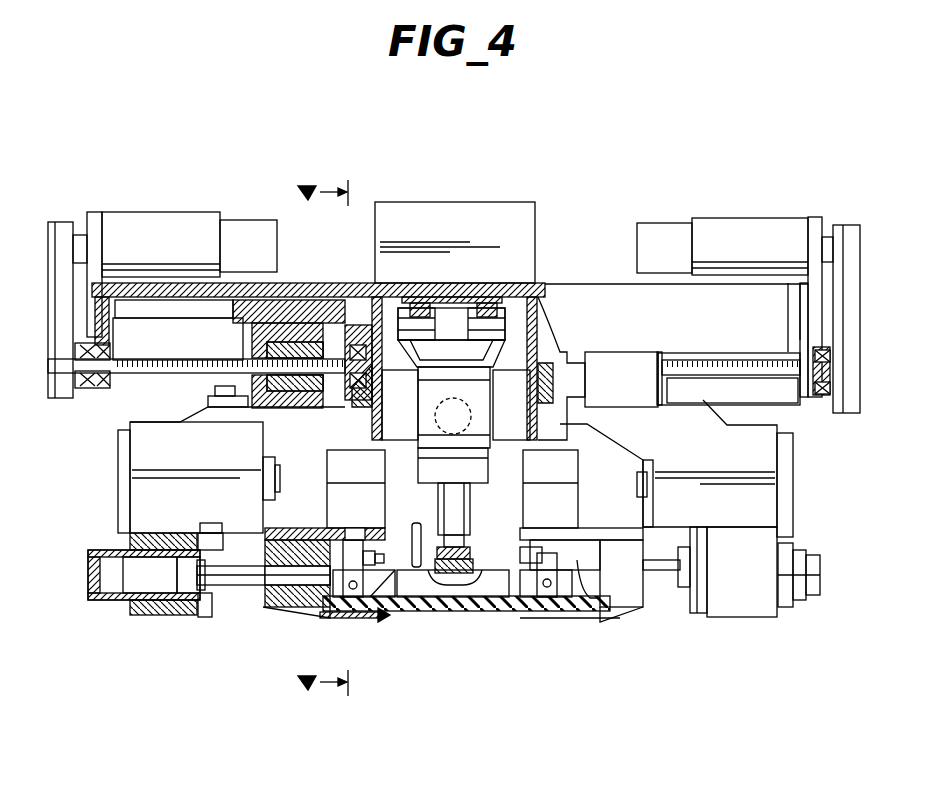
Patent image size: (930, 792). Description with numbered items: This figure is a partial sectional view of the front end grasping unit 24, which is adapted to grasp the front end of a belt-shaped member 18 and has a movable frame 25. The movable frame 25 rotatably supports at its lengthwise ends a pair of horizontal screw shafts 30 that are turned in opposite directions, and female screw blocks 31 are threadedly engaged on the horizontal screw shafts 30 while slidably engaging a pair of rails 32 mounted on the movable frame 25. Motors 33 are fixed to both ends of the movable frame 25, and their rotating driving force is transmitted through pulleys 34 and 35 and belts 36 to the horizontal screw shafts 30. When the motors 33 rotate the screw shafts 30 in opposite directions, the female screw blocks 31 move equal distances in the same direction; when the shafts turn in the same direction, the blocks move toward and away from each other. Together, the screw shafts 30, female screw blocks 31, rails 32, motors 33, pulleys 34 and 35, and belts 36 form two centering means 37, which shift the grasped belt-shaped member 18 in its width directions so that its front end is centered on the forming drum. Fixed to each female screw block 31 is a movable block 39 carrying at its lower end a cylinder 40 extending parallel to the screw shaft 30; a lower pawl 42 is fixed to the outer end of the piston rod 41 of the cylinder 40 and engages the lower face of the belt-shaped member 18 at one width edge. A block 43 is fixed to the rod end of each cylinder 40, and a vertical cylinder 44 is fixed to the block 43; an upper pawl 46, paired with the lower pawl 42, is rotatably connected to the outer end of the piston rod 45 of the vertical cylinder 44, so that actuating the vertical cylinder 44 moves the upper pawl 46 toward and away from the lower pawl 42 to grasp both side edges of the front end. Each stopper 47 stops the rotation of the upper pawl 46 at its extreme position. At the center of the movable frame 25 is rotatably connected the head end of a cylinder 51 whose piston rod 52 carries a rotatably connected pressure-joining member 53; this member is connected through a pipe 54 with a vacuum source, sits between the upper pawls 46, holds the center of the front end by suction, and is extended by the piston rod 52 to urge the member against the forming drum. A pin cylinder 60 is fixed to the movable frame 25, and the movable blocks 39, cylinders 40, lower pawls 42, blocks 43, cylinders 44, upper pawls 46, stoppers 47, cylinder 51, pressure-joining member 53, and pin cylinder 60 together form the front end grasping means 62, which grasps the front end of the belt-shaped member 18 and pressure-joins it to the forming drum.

The belt-shaped member 18 is at (445, 613).
The front end grasping unit 24 is at (548, 236).
The movable frame 25 is at (543, 290).
The horizontal screw shafts 30 is at (225, 358).
The female screw blocks 31 is at (587, 414).
The rails 32 is at (150, 318).
The motors 33 is at (190, 222).
The pulleys 34 is at (75, 220).
The pulleys 35 is at (83, 400).
The belts 36 is at (62, 292).
The centering means 37 is at (88, 210).
The movable block 39 is at (170, 428).
The cylinder 40 is at (152, 605).
The piston rod 41 is at (238, 590).
The lower pawl 42 is at (292, 612).
The block 43 is at (283, 532).
The vertical cylinder 44 is at (378, 468).
The piston rod 45 is at (357, 530).
The upper pawl 46 is at (400, 613).
The stopper 47 is at (410, 555).
The cylinder 51 is at (462, 367).
The piston rod 52 is at (467, 500).
The pressure-joining member 53 is at (492, 570).
The pipe 54 is at (453, 465).
The pin cylinder 60 is at (437, 407).
The front end grasping means 62 is at (487, 613).